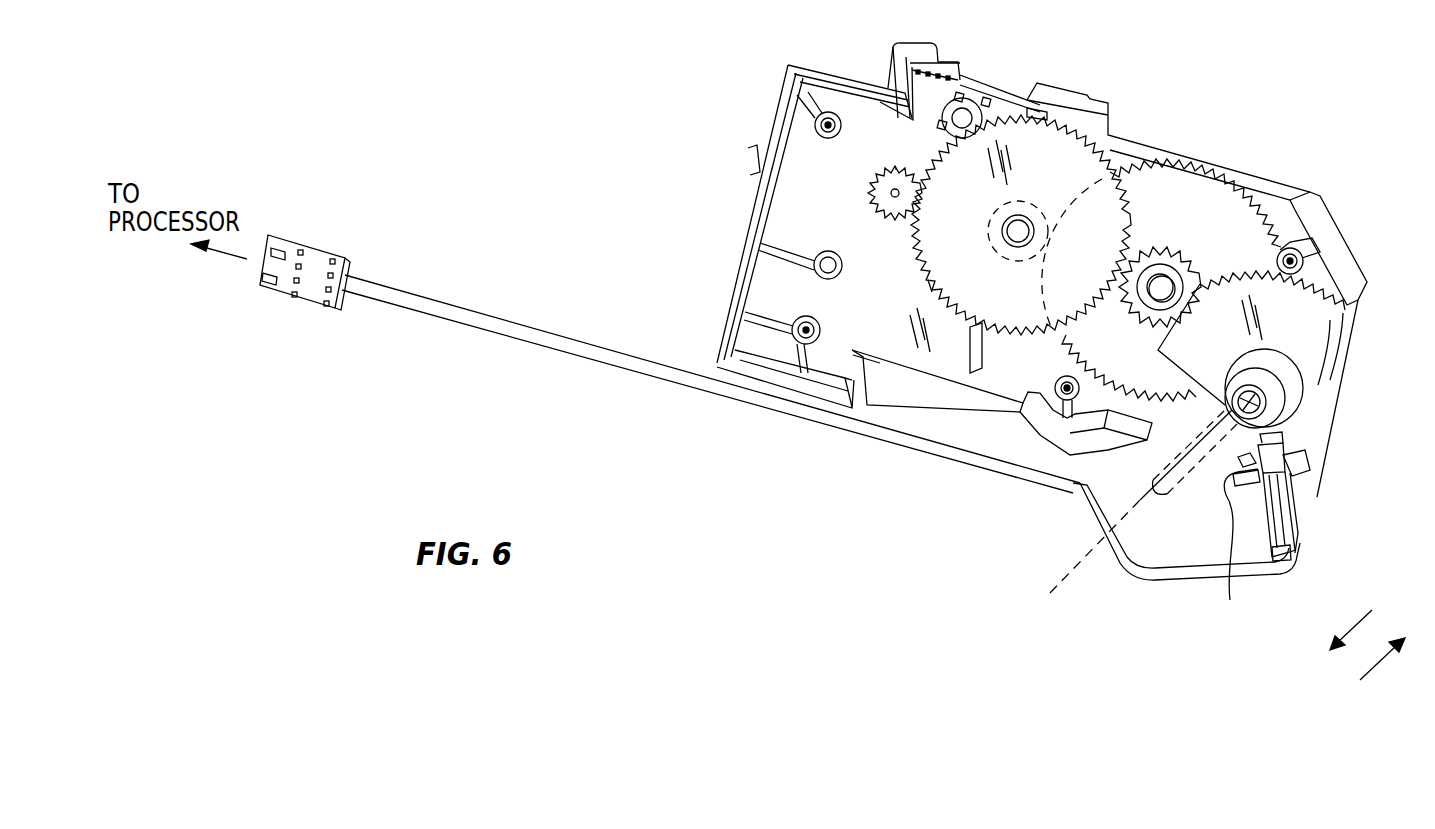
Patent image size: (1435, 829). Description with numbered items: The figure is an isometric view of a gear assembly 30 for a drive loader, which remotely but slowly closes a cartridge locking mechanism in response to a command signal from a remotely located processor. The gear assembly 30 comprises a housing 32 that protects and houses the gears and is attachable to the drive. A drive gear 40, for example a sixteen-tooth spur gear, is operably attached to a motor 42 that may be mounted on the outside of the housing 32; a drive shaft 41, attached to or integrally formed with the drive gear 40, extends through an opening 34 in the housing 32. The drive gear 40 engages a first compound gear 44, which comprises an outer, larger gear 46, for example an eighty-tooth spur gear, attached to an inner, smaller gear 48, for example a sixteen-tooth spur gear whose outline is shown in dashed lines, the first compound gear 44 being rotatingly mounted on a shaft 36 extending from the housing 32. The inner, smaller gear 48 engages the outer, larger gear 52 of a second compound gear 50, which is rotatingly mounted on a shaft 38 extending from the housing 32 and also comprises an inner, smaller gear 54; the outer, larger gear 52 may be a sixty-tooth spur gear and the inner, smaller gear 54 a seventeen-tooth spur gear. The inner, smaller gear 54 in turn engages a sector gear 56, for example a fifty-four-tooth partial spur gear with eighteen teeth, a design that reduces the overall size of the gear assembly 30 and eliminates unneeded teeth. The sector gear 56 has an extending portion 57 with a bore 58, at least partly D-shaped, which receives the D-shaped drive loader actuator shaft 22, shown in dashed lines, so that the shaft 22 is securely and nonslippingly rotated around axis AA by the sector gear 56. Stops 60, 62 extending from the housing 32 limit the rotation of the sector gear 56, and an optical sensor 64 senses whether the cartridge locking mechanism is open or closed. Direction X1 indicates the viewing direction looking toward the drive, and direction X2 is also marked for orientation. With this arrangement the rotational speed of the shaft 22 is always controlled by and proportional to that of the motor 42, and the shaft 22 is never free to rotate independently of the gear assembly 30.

The actuator shaft 22 is at (1192, 480).
The gear assembly 30 is at (588, 38).
The housing 32 is at (812, 68).
The opening 34 is at (896, 168).
The shaft 36 is at (1008, 232).
The shaft 38 is at (1160, 286).
The drive gear 40 is at (877, 195).
The drive shaft 41 is at (890, 200).
The motor 42 is at (968, 76).
The first compound gear 44 is at (1037, 110).
The outer, larger gear 46 is at (932, 290).
The inner, smaller gear 48 is at (1010, 277).
The second compound gear 50 is at (1223, 167).
The outer, larger gear 52 is at (1255, 205).
The inner, smaller gear 54 is at (1177, 260).
The sector gear 56 is at (1335, 328).
The extending portion 57 is at (1280, 380).
The bore 58 is at (1268, 394).
The stop 60 is at (1237, 550).
The stop 62 is at (1300, 466).
The optical sensor 64 is at (1303, 497).
The axis AA is at (1062, 578).
The direction X1 is at (1370, 612).
The second direction X2 is at (1370, 672).